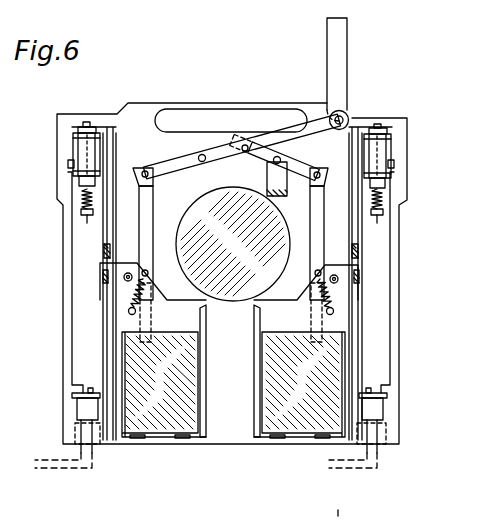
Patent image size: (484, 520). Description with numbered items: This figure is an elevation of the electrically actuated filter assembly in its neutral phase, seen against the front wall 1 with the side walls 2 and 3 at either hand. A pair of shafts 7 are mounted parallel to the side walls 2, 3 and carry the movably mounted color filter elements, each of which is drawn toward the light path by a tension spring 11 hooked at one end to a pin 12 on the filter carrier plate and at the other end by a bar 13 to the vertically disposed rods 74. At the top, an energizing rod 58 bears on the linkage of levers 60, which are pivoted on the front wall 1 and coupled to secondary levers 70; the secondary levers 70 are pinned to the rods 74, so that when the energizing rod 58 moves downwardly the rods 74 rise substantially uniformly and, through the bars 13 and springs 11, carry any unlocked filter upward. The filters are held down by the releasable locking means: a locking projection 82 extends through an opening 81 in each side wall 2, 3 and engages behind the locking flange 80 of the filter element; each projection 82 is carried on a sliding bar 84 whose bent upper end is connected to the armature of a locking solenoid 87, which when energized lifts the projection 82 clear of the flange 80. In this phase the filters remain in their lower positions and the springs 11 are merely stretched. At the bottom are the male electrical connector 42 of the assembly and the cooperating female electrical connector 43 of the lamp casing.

The front wall 1 is at (128, 102).
The side wall 2 is at (108, 162).
The side wall 3 is at (355, 177).
The shaft 7 is at (131, 274).
The tension spring 11 is at (149, 283).
The pin 12 is at (129, 313).
The bar 13 is at (149, 273).
The male electrical connector 42 is at (79, 405).
The female electrical connector 43 is at (96, 452).
The energizing rod 58 is at (338, 94).
The lever 60 is at (198, 157).
The secondary lever 70 is at (298, 162).
The vertically disposed rod 74 is at (153, 200).
The locking flange 80 is at (342, 264).
The opening 81 is at (107, 258).
The locking projection 82 is at (356, 247).
The sliding bar 84 is at (364, 262).
The locking solenoid 87 is at (80, 152).